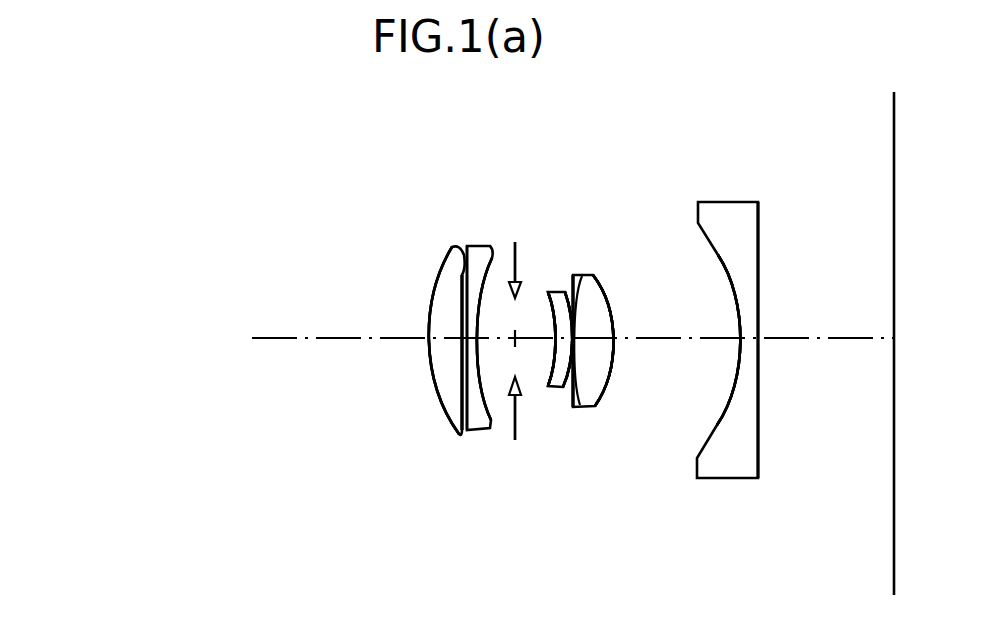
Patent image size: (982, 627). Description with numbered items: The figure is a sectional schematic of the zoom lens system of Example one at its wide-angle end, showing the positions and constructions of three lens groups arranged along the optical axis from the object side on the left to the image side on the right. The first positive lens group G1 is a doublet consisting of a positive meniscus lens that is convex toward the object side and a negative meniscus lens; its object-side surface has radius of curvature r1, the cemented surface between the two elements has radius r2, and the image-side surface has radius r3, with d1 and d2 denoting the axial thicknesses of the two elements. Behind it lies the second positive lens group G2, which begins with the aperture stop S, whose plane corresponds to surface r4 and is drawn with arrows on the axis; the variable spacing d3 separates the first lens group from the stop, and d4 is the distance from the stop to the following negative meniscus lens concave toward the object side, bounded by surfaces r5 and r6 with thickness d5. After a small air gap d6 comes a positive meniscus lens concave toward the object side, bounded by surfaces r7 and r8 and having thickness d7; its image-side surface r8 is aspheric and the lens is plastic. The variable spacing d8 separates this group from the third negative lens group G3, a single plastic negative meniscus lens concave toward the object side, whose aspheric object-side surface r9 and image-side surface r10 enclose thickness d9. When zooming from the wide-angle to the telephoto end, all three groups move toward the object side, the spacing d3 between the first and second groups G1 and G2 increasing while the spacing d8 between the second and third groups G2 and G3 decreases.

The first positive lens group G1 is at (495, 153).
The second positive lens group G2 is at (610, 153).
The third negative lens group G3 is at (758, 153).
The aperture stop S is at (516, 241).
The radius of curvature of first lens surface r1 is at (443, 271).
The radius of curvature of second lens surface r2 is at (451, 248).
The radius of curvature of third lens surface r3 is at (494, 257).
The radius of curvature of fourth lens surface r4 is at (515, 312).
The radius of curvature of fifth lens surface r5 is at (548, 291).
The radius of curvature of sixth lens surface r6 is at (575, 293).
The radius of curvature of seventh lens surface r7 is at (594, 281).
The radius of curvature of eighth lens surface r8 is at (606, 290).
The radius of curvature of ninth lens surface r9 is at (715, 254).
The radius of curvature of tenth lens surface r10 is at (758, 248).
The spacing between first and second lens surfaces d1 is at (443, 340).
The spacing between second and third lens surfaces d2 is at (465, 345).
The spacing between third and fourth lens surfaces d3 is at (516, 339).
The spacing between fourth and fifth lens surfaces d4 is at (535, 341).
The spacing between fifth and sixth lens surfaces d5 is at (556, 375).
The spacing between sixth and seventh lens surfaces d6 is at (567, 377).
The spacing between seventh and eighth lens surfaces d7 is at (593, 341).
The spacing between eighth and ninth lens surfaces d8 is at (666, 340).
The spacing between ninth and tenth lens surfaces d9 is at (747, 342).